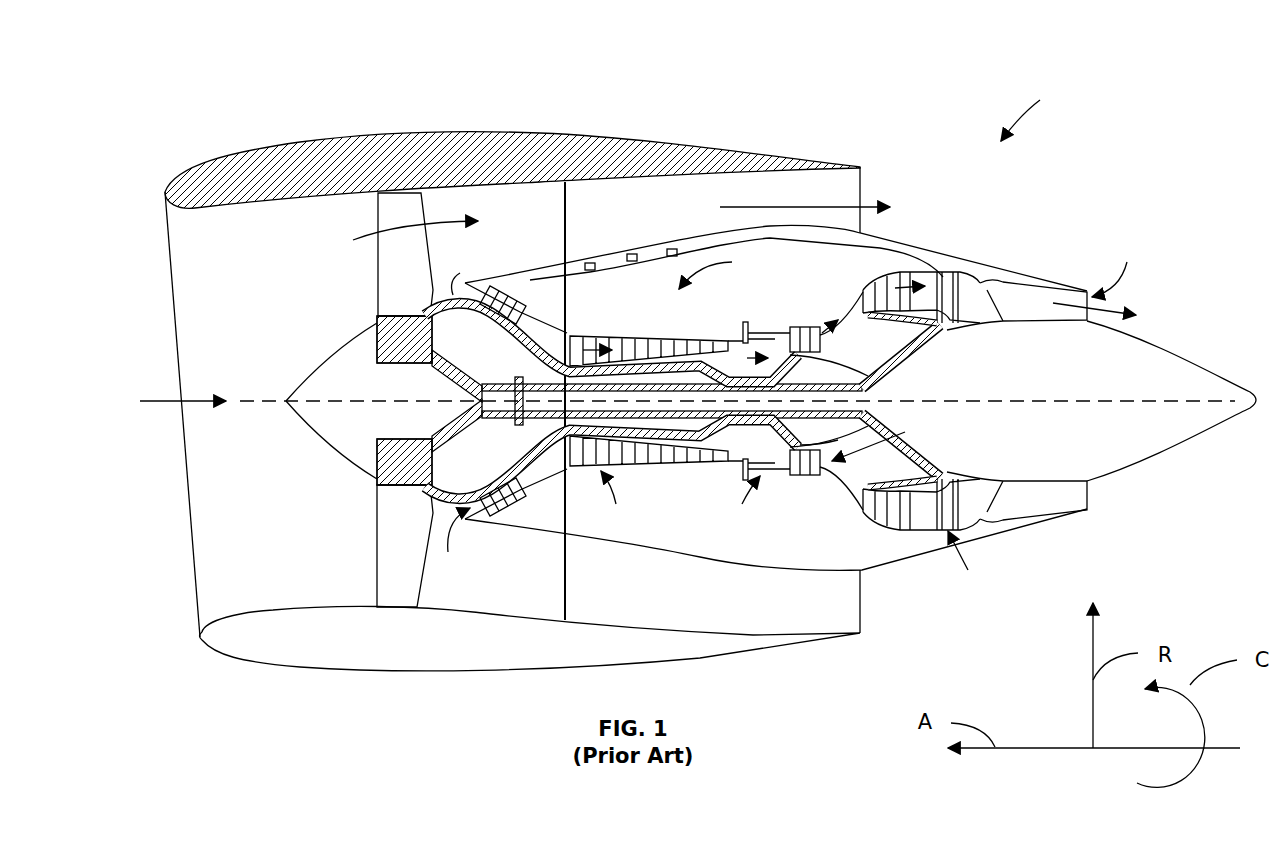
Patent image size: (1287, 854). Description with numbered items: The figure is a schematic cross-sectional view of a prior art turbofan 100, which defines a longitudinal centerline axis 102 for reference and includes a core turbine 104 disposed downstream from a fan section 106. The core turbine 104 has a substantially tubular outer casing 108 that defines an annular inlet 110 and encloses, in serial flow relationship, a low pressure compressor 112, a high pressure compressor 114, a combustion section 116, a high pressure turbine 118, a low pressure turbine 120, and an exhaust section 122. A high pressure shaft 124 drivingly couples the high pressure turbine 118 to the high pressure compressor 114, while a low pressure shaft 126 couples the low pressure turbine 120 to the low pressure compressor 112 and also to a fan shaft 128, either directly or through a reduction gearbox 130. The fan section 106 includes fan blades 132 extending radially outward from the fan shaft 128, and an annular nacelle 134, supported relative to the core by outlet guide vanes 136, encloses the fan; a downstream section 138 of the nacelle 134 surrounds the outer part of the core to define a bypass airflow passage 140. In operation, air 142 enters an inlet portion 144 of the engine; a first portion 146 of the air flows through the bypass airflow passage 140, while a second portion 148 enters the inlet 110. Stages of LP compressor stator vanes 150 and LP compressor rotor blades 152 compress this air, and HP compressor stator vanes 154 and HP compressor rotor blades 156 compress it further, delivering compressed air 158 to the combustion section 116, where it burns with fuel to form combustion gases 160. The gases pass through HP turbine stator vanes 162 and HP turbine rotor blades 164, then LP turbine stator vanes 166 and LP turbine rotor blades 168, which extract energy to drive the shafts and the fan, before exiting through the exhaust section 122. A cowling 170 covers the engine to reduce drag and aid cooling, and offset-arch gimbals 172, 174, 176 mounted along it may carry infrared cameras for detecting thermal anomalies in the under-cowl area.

The turbofan 100 is at (1043, 107).
The longitudinal centerline axis 102 is at (1010, 399).
The core turbine 104 is at (726, 270).
The fan section 106 is at (296, 262).
The outer casing 108 is at (710, 560).
The annular inlet 110 is at (452, 541).
The low pressure compressor 112 is at (530, 470).
The high pressure compressor 114 is at (618, 500).
The combustion section 116 is at (752, 426).
The high pressure turbine 118 is at (887, 440).
The low pressure turbine 120 is at (927, 538).
The exhaust section 122 is at (1044, 378).
The high pressure shaft 124 is at (820, 360).
The low pressure shaft 126 is at (528, 380).
The fan shaft 128 is at (430, 367).
The reduction gearbox 130 is at (570, 457).
The fan blades 132 is at (376, 537).
The nacelle 134 is at (405, 673).
The outlet guide vanes 136 is at (564, 210).
The downstream section 138 is at (771, 149).
The bypass airflow passage 140 is at (736, 229).
The air 142 is at (193, 398).
The inlet portion 144 is at (197, 607).
The first portion of the air 146 is at (392, 228).
The second portion of the air 148 is at (620, 300).
The LP compressor stator vanes 150 is at (490, 514).
The LP compressor rotor blades 152 is at (505, 514).
The HP compressor stator vanes 154 is at (682, 462).
The HP compressor rotor blades 156 is at (690, 470).
The compressed air 158 is at (727, 345).
The combustion gases 160 is at (913, 288).
The HP turbine stator vanes 162 is at (797, 470).
The HP turbine rotor blades 164 is at (829, 430).
The LP turbine stator vanes 166 is at (873, 297).
The LP turbine rotor blades 168 is at (877, 270).
The cowling 170 is at (757, 228).
The offset-arch gimbal 172 is at (590, 263).
The offset-arch gimbal 174 is at (632, 254).
The offset-arch gimbal 176 is at (672, 249).